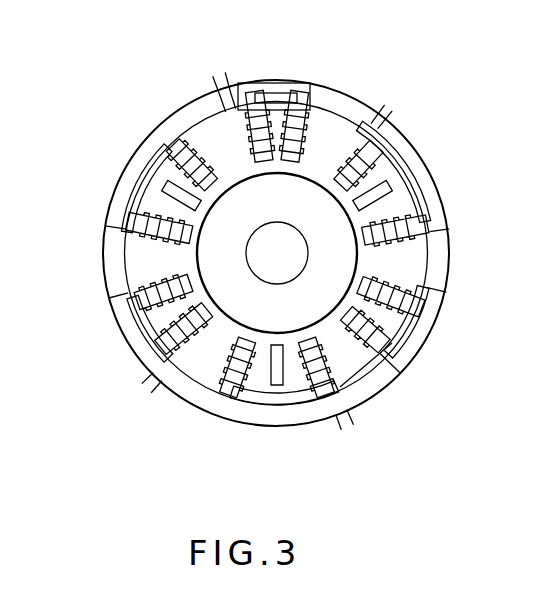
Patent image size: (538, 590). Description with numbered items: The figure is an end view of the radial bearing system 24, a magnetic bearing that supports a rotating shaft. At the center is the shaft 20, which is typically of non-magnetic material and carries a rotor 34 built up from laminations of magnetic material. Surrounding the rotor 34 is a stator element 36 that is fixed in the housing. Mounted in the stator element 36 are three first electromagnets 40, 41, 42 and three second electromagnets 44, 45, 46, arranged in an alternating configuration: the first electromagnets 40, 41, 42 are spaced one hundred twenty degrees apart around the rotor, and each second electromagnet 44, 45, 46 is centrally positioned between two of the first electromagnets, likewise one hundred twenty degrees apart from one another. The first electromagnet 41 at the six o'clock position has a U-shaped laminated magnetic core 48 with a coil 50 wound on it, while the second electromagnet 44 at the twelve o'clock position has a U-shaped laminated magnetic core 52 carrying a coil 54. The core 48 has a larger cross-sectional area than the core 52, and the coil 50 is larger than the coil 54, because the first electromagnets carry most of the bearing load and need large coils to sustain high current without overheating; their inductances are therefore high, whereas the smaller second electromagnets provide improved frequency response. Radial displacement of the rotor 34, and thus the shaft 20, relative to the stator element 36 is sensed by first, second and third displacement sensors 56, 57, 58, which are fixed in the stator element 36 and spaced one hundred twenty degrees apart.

The shaft 20 is at (281, 240).
The radial bearing system 24 is at (70, 273).
The rotor 34 is at (355, 256).
The stator element 36 is at (447, 210).
The first electromagnet 40 is at (432, 135).
The first electromagnet 41 is at (313, 448).
The first electromagnet 42 is at (125, 142).
The second electromagnet 44 is at (252, 64).
The second electromagnet 45 is at (463, 345).
The second electromagnet 46 is at (118, 360).
The U-shaped laminated magnetic core 48 is at (327, 413).
The coil 50 is at (222, 366).
The U-shaped laminated magnetic core 52 is at (323, 96).
The coil 54 is at (200, 176).
The first displacement sensor 56 is at (437, 193).
The second displacement sensor 57 is at (268, 380).
The third displacement sensor 58 is at (134, 216).